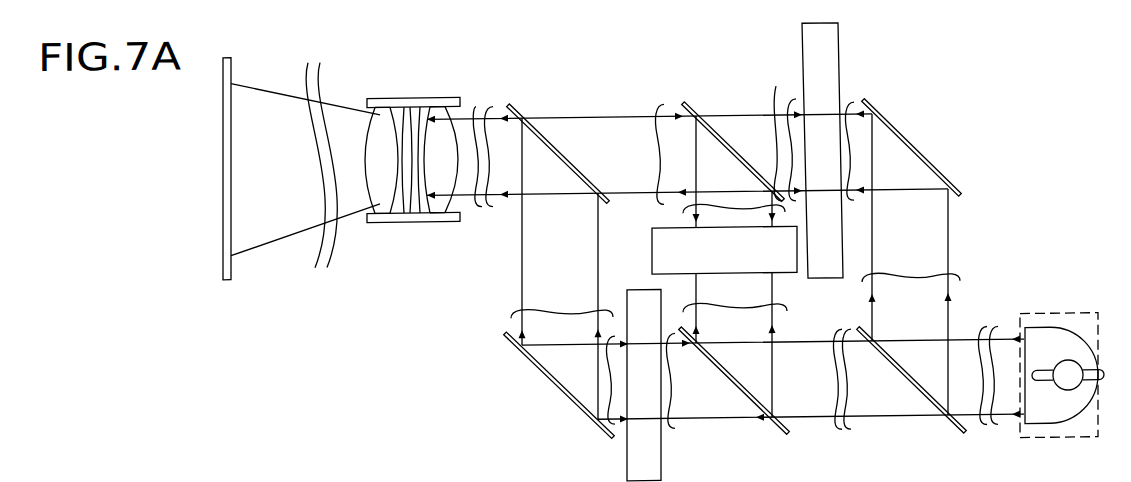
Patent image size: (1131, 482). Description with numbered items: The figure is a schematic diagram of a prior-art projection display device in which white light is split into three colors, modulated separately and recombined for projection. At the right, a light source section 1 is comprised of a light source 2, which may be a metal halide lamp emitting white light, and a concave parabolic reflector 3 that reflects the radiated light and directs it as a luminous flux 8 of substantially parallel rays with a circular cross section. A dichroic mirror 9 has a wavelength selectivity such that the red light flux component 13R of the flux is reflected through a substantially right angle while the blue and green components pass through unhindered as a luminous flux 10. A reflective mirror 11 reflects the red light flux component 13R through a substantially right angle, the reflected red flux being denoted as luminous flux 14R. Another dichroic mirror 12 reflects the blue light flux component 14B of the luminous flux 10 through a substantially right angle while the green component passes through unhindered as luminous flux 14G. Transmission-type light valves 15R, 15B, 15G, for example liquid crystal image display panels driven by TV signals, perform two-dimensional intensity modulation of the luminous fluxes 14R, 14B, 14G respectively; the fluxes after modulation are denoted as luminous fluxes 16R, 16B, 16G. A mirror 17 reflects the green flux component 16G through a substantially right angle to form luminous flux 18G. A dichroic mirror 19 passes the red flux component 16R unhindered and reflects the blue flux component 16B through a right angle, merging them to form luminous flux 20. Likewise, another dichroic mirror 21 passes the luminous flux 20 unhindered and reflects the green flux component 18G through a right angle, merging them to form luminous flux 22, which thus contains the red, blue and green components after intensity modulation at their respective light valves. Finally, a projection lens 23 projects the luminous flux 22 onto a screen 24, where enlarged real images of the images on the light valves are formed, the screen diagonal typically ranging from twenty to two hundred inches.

The light source section 1 is at (1072, 385).
The light source 2 is at (1105, 385).
The parabolic reflector 3 is at (1060, 428).
The luminous flux 8 is at (982, 330).
The dichroic mirror 9 is at (955, 434).
The luminous flux 10 is at (838, 432).
The reflective mirror 11 is at (926, 158).
The dichroic mirror 12 is at (778, 437).
The red light flux component 13R is at (910, 277).
The luminous flux 14R is at (848, 106).
The blue light flux component 14B is at (740, 306).
The luminous flux 14G is at (668, 430).
The transmission-type light valve 15R is at (843, 46).
The transmission-type light valve 15B is at (652, 262).
The transmission-type light valve 15G is at (627, 462).
The luminous flux 16R is at (778, 131).
The luminous flux 16B is at (733, 207).
The luminous flux 16G is at (608, 366).
The mirror 17 is at (595, 430).
The luminous flux 18G is at (560, 308).
The dichroic mirror 19 is at (699, 100).
The luminous flux 20 is at (656, 152).
The dichroic mirror 21 is at (522, 108).
The luminous flux 22 is at (476, 106).
The projection lens 23 is at (442, 219).
The screen 24 is at (231, 272).